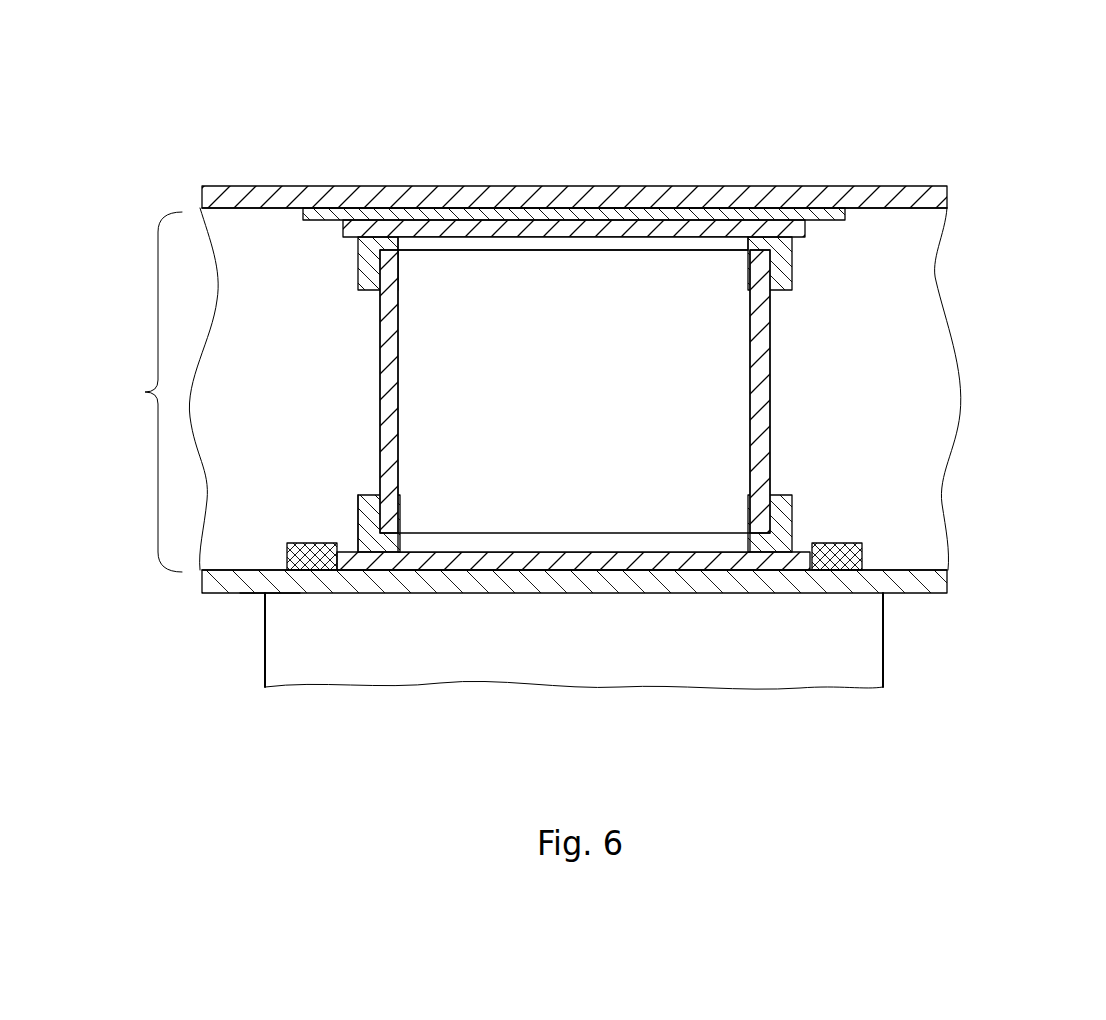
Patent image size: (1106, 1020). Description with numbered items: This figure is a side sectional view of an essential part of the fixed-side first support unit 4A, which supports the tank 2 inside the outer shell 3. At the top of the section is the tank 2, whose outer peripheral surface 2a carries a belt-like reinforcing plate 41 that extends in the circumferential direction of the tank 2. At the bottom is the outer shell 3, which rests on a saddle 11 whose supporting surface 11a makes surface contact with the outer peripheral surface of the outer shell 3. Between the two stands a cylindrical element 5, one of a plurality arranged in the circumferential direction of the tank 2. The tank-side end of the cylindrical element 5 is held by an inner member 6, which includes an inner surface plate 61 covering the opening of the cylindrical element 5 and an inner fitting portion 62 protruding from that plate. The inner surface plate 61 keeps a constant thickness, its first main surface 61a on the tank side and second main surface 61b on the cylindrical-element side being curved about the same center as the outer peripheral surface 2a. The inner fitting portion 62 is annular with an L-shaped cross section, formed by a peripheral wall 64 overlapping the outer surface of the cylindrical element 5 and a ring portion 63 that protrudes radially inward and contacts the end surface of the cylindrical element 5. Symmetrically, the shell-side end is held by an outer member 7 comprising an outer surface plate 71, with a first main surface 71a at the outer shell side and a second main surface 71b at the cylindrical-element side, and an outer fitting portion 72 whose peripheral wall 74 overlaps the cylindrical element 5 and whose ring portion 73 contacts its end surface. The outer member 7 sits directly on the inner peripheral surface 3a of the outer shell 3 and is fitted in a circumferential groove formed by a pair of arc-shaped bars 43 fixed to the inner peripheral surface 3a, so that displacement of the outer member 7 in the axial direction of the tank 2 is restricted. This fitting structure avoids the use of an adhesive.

The tank 2 is at (895, 186).
The outer peripheral surface of the tank 2a is at (893, 208).
The outer shell 3 is at (901, 594).
The inner peripheral surface of the outer shell 3a is at (909, 570).
The first support unit 4A is at (144, 392).
The cylindrical element 5 is at (590, 302).
The inner member 6 is at (573, 152).
The inner surface plate 61 is at (573, 159).
The first main surface of the inner surface plate 61a is at (532, 244).
The second main surface of the inner surface plate 61b is at (533, 238).
The inner fitting portion 62 is at (800, 266).
The ring portion of the inner fitting portion 63 is at (367, 267).
The peripheral wall of the inner fitting portion 64 is at (348, 228).
The reinforcing plate 41 is at (313, 212).
The arc-shaped bar 43 is at (312, 558).
The outer member 7 is at (566, 640).
The outer surface plate 71 is at (573, 632).
The first main surface of the outer surface plate 71a is at (540, 562).
The second main surface of the outer surface plate 71b is at (600, 545).
The outer fitting portion 72 is at (806, 522).
The ring portion of the outer fitting portion 73 is at (390, 540).
The peripheral wall of the outer fitting portion 74 is at (362, 512).
The saddle 11 is at (843, 663).
The supporting surface 11a is at (278, 592).